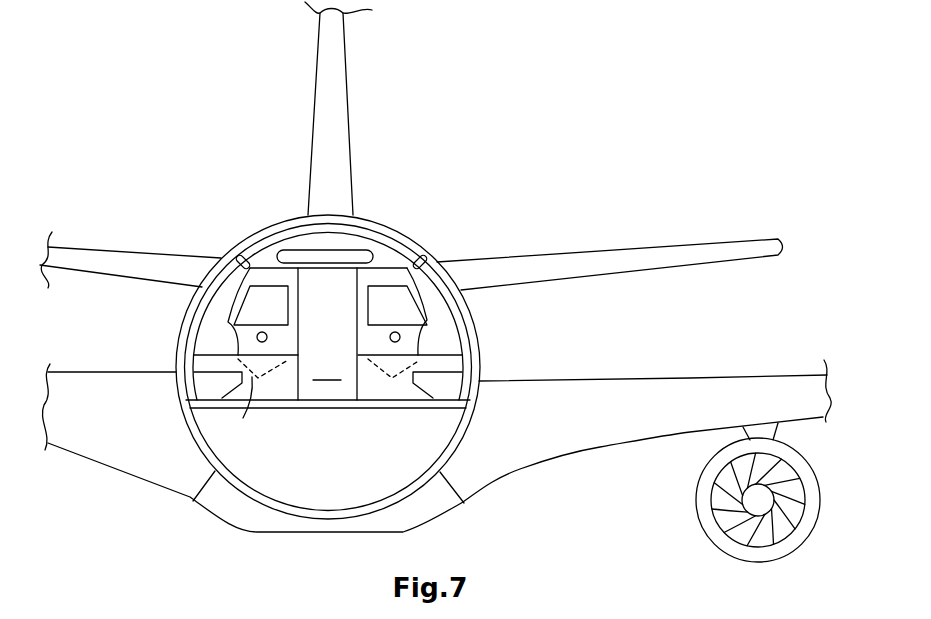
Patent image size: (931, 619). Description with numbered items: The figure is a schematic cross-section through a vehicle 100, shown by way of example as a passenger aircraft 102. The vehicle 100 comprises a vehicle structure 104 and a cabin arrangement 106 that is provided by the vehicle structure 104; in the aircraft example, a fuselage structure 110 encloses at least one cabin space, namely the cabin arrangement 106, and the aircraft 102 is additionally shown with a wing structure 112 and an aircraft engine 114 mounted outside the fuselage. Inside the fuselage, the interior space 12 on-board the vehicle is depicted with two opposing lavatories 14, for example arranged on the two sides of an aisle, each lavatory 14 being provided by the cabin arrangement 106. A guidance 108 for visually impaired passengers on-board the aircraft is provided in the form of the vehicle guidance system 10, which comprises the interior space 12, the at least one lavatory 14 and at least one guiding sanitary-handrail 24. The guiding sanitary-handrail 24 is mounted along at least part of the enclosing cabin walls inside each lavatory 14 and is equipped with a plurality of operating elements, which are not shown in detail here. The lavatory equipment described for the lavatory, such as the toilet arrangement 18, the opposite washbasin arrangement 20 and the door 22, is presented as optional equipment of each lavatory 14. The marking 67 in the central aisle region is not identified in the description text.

The vehicle 100 is at (418, 126).
The aircraft 102 is at (258, 216).
The interior space 12 is at (314, 288).
The cabin arrangement 106 is at (335, 286).
The vehicle structure 104 is at (437, 233).
The fuselage structure 110 is at (500, 326).
The wing structure 112 is at (673, 378).
The guidance 108 is at (204, 335).
The guiding sanitary-handrail 24 is at (235, 322).
The door 22 is at (304, 331).
The aisle 67 is at (327, 366).
The lavatory 14 is at (392, 385).
The washbasin arrangement 20 is at (248, 388).
The vehicle guidance system 10 is at (263, 395).
The toilet arrangement 18 is at (181, 400).
The aircraft engine 114 is at (697, 512).